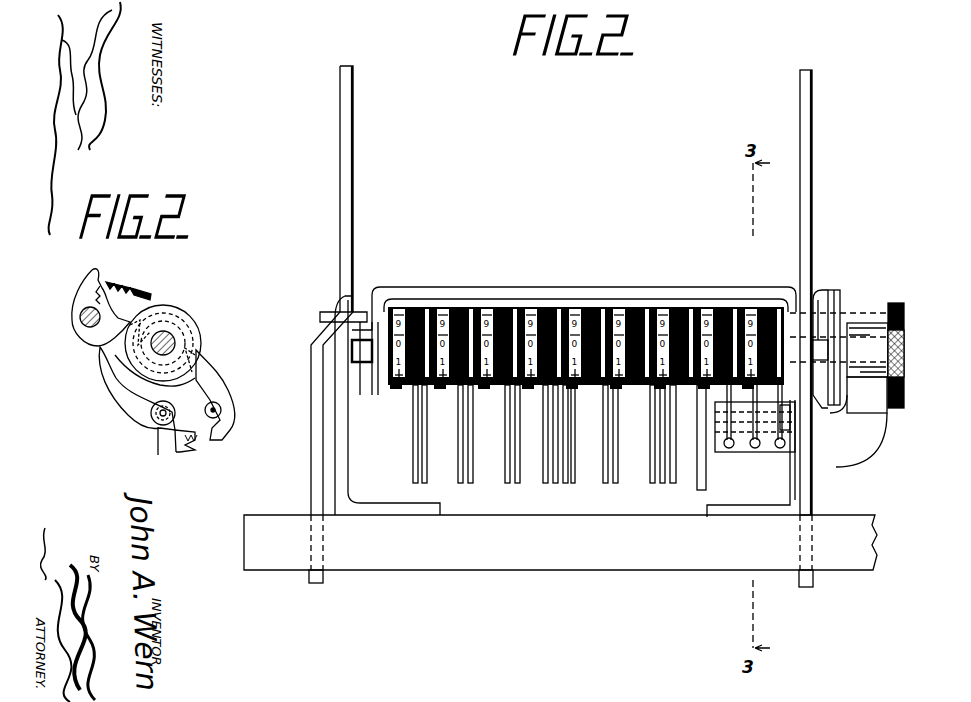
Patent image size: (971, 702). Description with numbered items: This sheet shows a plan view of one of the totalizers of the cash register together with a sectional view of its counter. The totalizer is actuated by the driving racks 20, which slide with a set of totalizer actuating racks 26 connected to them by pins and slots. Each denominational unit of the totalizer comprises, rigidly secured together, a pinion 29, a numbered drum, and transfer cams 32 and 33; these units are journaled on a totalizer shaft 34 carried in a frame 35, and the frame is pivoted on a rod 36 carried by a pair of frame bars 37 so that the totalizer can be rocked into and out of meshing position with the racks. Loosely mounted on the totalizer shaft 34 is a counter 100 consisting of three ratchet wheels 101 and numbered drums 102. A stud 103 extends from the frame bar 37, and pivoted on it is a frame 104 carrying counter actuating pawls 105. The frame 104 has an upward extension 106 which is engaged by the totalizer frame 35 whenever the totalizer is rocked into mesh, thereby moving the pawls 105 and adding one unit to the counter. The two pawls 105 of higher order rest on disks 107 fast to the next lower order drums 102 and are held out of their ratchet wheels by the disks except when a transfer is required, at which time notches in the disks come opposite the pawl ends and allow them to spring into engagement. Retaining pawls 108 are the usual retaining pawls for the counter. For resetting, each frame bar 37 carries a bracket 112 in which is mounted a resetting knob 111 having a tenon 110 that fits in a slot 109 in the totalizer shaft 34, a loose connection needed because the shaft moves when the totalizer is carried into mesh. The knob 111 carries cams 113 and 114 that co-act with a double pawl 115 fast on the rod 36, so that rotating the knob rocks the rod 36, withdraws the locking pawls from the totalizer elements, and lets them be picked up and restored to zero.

In FIG. 2, the driving rack 20 is at (545, 484).
In FIG. 2, the totalizer actuating rack 26 is at (543, 480).
In FIG. 2, the pinion 29 is at (510, 308).
In FIG. 2, the transfer cam 32 is at (455, 308).
In FIG. 2, the transfer cam 33 is at (430, 308).
In FIG. 2, the totalizer shaft 34 is at (368, 380).
In FIG. 3, the totalizer shaft 34 is at (176, 340).
In FIG. 2, the totalizer frame 35 is at (390, 306).
In FIG. 3, the totalizer frame 35 is at (140, 292).
In FIG. 2, the rod 36 is at (335, 305).
In FIG. 3, the rod 36 is at (82, 312).
In FIG. 2, the frame bar 37 is at (353, 183).
In FIG. 2, the counter 100 is at (742, 308).
In FIG. 2, the ratchet wheel 101 is at (716, 308).
In FIG. 3, the ratchet wheel 101 is at (175, 312).
In FIG. 2, the numbered drum 102 is at (770, 308).
In FIG. 3, the numbered drum 102 is at (190, 325).
In FIG. 2, the stud 103 is at (793, 413).
In FIG. 3, the stud 103 is at (175, 445).
In FIG. 2, the frame 104 is at (770, 455).
In FIG. 3, the frame 104 is at (190, 398).
In FIG. 2, the counter actuating pawl 105 is at (780, 433).
In FIG. 3, the counter actuating pawl 105 is at (218, 372).
In FIG. 2, the upward extension 106 is at (790, 393).
In FIG. 3, the upward extension 106 is at (100, 357).
In FIG. 2, the disk 107 is at (760, 308).
In FIG. 3, the retaining pawl 108 is at (80, 290).
In FIG. 2, the slot 109 is at (818, 300).
In FIG. 2, the tenon 110 is at (813, 347).
In FIG. 2, the resetting knob 111 is at (904, 357).
In FIG. 2, the bracket 112 is at (882, 427).
In FIG. 2, the cam 113 is at (841, 316).
In FIG. 2, the cam 114 is at (843, 352).
In FIG. 2, the double pawl 115 is at (841, 296).